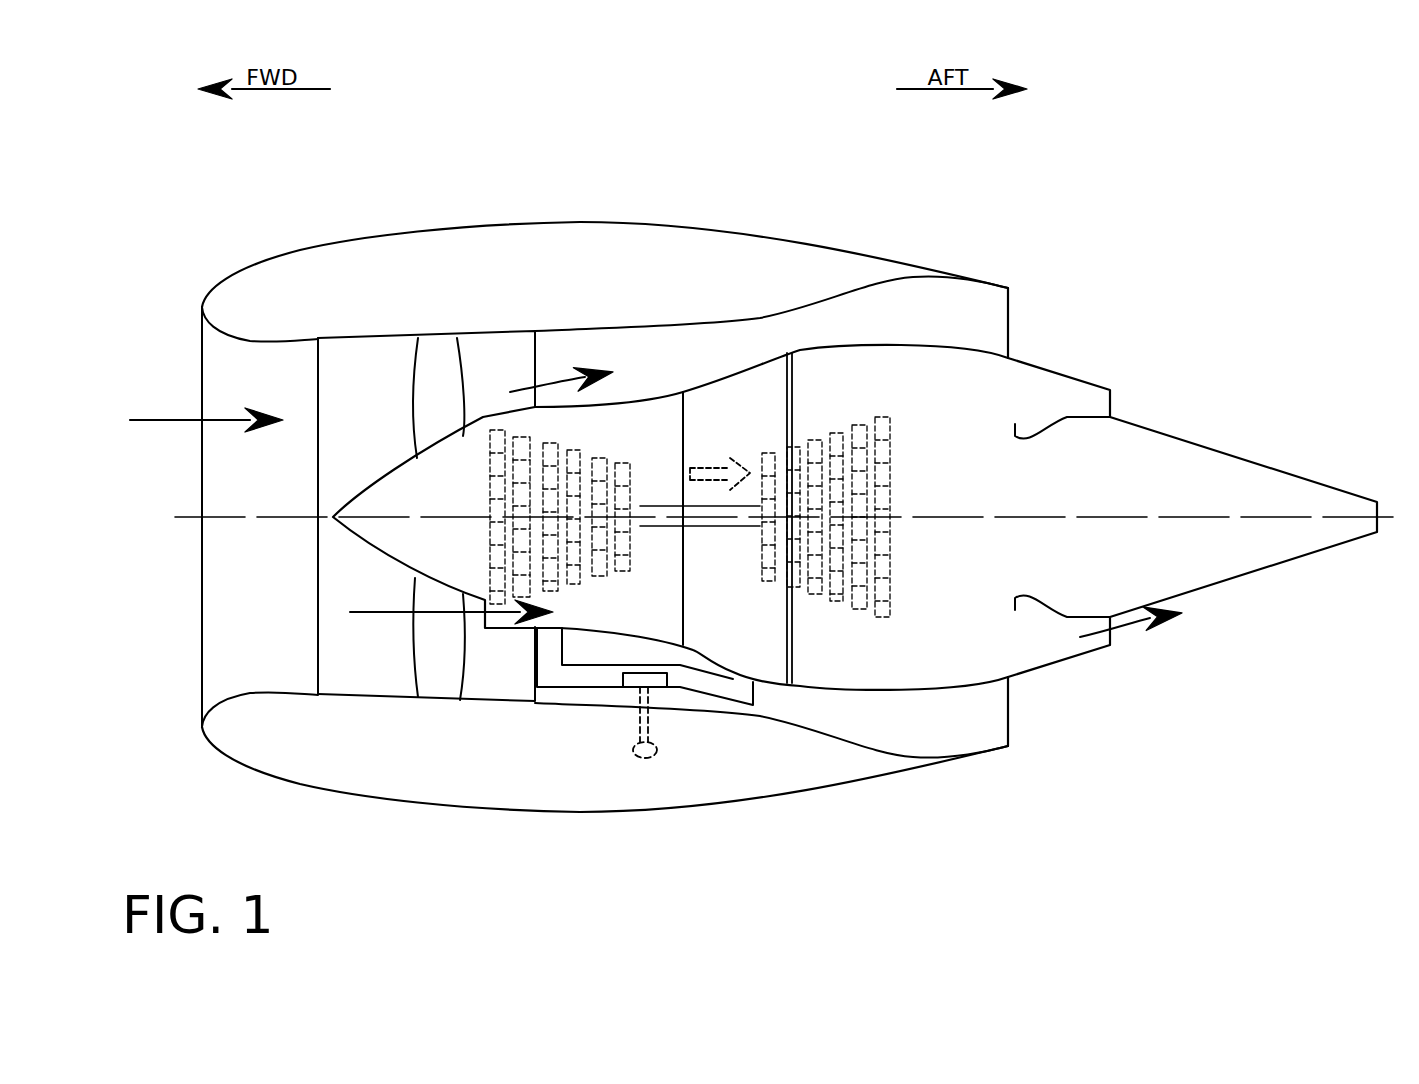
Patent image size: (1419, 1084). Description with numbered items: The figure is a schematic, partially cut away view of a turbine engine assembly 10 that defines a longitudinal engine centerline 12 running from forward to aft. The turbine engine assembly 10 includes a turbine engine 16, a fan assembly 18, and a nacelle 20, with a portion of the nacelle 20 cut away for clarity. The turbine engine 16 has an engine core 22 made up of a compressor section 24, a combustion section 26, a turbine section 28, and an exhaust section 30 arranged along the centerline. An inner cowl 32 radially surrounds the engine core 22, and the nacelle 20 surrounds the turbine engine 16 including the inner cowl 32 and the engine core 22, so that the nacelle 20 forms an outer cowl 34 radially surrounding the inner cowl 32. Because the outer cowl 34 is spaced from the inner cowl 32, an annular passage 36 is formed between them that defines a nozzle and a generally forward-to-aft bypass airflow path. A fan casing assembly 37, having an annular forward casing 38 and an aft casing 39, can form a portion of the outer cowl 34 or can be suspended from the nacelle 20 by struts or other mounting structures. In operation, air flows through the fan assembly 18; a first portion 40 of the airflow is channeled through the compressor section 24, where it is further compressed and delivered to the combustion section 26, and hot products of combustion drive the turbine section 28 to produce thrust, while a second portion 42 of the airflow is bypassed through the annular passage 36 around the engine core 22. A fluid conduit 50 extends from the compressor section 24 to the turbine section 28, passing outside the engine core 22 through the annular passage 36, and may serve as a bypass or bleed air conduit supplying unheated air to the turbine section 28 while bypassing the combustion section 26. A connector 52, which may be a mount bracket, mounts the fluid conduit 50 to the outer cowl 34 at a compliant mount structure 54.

The turbine engine assembly 10 is at (447, 157).
The longitudinal engine centerline 12 is at (180, 518).
The turbine engine 16 is at (662, 422).
The fan assembly 18 is at (427, 357).
The nacelle 20 is at (290, 250).
The engine core 22 is at (672, 606).
The compressor section 24 is at (588, 572).
The combustion section 26 is at (711, 528).
The turbine section 28 is at (833, 530).
The exhaust section 30 is at (1097, 650).
The inner cowl 32 is at (800, 343).
The outer cowl 34 is at (813, 303).
The annular passage 36 is at (963, 716).
The fan casing assembly 37 is at (322, 645).
The annular forward casing 38 is at (317, 604).
The aft casing 39 is at (512, 325).
The first portion of the airflow 40 is at (478, 700).
The second portion of the airflow 42 is at (560, 387).
The fluid conduit 50 is at (560, 698).
The connector 52 is at (650, 727).
The compliant mount structure 54 is at (622, 685).